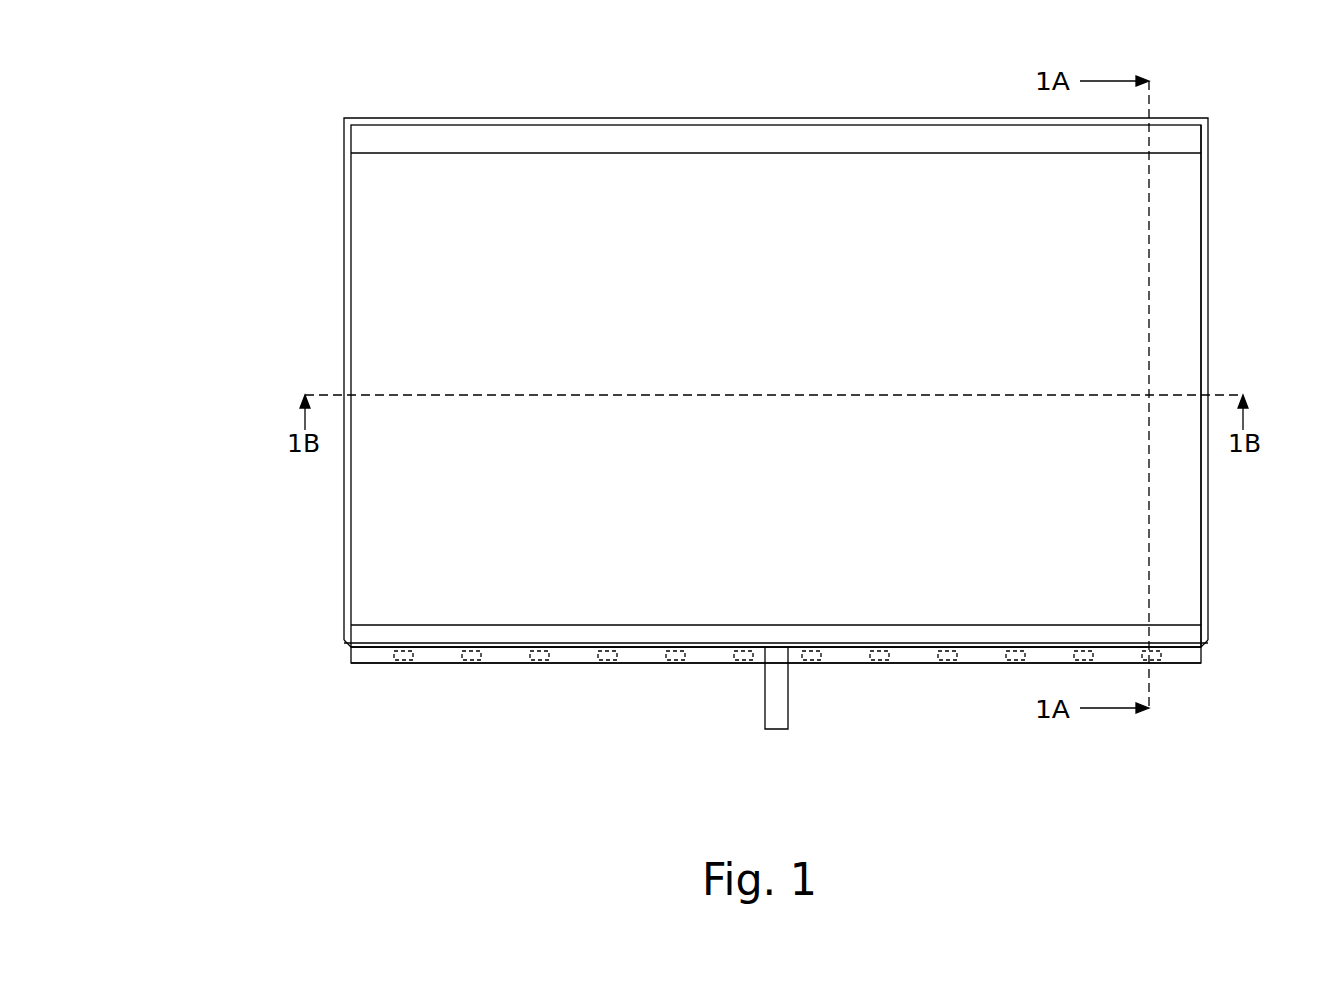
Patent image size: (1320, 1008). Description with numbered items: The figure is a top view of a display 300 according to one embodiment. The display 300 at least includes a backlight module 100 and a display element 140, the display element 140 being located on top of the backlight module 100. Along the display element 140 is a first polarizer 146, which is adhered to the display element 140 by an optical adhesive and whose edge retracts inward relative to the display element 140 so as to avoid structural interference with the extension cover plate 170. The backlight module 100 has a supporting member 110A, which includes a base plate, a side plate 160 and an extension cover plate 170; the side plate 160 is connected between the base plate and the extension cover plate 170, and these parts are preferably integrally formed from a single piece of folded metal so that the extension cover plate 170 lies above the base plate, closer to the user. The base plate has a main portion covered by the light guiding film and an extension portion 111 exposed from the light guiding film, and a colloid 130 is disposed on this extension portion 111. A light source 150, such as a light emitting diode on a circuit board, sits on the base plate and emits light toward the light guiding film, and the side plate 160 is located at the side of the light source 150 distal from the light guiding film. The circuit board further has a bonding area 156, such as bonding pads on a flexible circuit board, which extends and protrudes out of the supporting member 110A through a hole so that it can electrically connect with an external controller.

The display 300 is at (262, 46).
The backlight module 100 is at (197, 575).
The colloid 130 is at (344, 472).
The display element 140 is at (1192, 631).
The first polarizer 146 is at (1195, 537).
The extension portion 111 is at (345, 633).
The supporting member 110A is at (281, 608).
The extension cover plate 170 is at (366, 655).
The side plate 160 is at (427, 663).
The light source 150 is at (945, 657).
The bonding area 156 is at (781, 703).